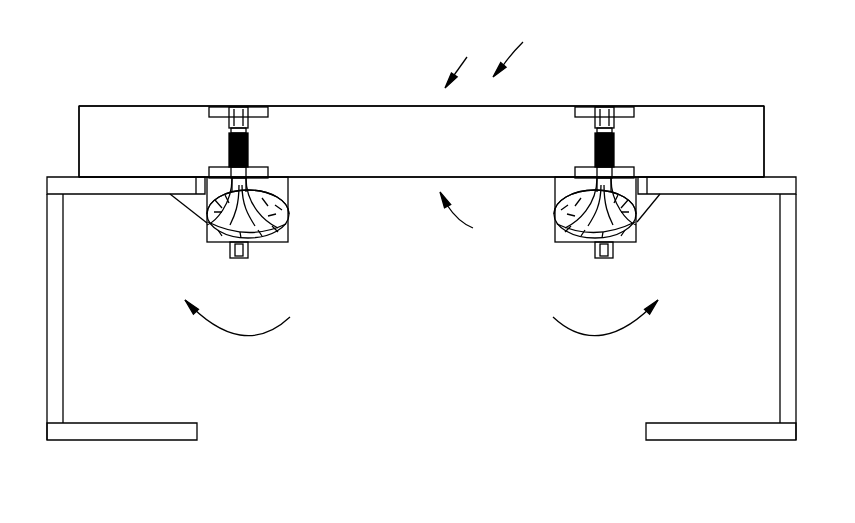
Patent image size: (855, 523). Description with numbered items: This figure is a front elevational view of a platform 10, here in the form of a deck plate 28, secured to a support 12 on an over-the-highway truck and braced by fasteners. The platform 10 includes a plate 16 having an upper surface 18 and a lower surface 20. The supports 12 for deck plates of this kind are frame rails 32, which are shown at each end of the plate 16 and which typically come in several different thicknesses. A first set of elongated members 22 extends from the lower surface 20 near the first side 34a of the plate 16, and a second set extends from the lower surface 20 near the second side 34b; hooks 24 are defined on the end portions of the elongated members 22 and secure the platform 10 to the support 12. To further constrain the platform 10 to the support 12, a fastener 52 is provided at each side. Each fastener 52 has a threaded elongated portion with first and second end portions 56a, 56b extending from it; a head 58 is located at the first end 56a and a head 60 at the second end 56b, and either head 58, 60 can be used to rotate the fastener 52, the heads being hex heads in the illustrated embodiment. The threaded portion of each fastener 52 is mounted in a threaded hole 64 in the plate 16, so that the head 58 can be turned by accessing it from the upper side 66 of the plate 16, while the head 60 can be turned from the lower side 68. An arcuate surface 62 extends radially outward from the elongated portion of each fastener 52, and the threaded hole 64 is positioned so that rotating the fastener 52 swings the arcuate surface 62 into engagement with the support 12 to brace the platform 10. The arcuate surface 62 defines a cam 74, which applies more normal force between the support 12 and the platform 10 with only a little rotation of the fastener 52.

The platform 10 is at (418, 69).
The support 12 is at (52, 146).
The plate 16 is at (155, 132).
The upper surface 18 is at (328, 105).
The lower surface 20 is at (350, 178).
The elongated members 22 is at (648, 188).
The hooks 24 is at (195, 203).
The deck plate 28 is at (465, 61).
The frame rails 32 is at (62, 287).
The first side 34a is at (79, 133).
The second side 34b is at (764, 140).
The fastener 52 is at (288, 267).
The first end portion 56a is at (238, 112).
The second end portion 56b is at (243, 258).
The head 58 is at (605, 110).
The head 60 is at (613, 255).
The arcuate surface 62 is at (287, 232).
The threaded hole 64 is at (248, 140).
The upper side 66 is at (515, 48).
The lower side 68 is at (471, 216).
The cam 74 is at (278, 217).